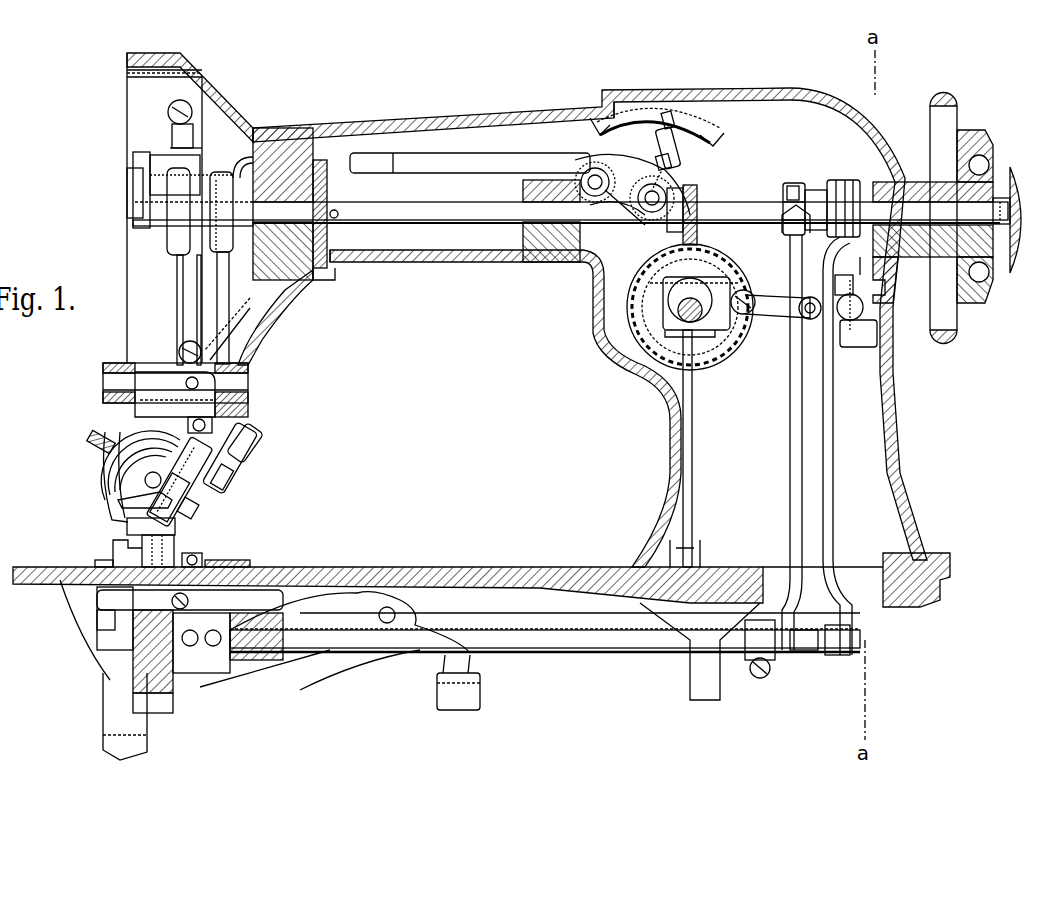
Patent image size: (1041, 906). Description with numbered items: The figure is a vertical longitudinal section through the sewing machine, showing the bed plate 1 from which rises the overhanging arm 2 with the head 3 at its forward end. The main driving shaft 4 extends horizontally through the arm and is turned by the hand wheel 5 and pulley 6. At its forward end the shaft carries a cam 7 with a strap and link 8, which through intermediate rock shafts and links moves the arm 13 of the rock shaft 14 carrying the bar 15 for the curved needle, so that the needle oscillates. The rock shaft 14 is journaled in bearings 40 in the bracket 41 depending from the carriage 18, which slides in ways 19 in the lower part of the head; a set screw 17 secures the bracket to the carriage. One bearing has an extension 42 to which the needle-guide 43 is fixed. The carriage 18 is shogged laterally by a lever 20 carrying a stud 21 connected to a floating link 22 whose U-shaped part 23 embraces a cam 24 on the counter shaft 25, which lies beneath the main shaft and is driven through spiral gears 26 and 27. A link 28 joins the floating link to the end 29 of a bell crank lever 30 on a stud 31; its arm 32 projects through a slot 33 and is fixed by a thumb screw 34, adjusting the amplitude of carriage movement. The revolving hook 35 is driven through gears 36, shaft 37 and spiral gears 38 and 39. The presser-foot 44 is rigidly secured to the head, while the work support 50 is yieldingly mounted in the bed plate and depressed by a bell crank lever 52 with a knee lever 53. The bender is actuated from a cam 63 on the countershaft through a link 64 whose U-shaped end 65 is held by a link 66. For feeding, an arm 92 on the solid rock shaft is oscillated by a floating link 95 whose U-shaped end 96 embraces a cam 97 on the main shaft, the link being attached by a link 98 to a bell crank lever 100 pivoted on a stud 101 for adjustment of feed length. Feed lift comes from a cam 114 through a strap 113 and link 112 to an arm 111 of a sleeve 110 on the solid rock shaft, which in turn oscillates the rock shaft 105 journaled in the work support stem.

The bed plate 1 is at (292, 570).
The overhanging arm 2 is at (545, 120).
The head 3 is at (215, 92).
The main driving shaft 4 is at (480, 204).
The hand wheel 5 is at (1012, 180).
The pulley 6 is at (975, 135).
The cam 7 is at (221, 172).
The strap and link 8 is at (218, 279).
The arm 13 is at (240, 472).
The rock shaft 14 is at (230, 482).
The bar 15 is at (158, 476).
The set screw 17 is at (214, 424).
The carriage 18 is at (185, 380).
The ways 19 is at (250, 397).
The lever 20 is at (178, 291).
The stud 21 is at (175, 245).
The floating link 22 is at (252, 160).
The U-shaped part 23 is at (735, 250).
The cam 24 is at (745, 278).
The counter shaft 25 is at (680, 312).
The spiral gear 26 is at (699, 200).
The spiral gear 27 is at (715, 365).
The link 28 is at (625, 215).
The end of bell crank lever 29 is at (603, 172).
The bell crank lever 30 is at (668, 185).
The stud 31 is at (697, 182).
The arm 32 is at (676, 165).
The slot 33 is at (705, 125).
The thumb screw 34 is at (672, 108).
The revolving hook 35 is at (104, 470).
The gears 36 is at (90, 428).
The shaft 37 is at (243, 290).
The spiral gear 38 is at (330, 226).
The spiral gear 39 is at (322, 160).
The bearings 40 is at (206, 495).
The bracket 41 is at (252, 458).
The extension 42 is at (198, 512).
The needle-guide 43 is at (180, 522).
The presser-foot 44 is at (128, 524).
The work support 50 is at (140, 552).
The bell crank lever 52 is at (275, 680).
The knee lever 53 is at (440, 710).
The cam 63 is at (672, 292).
The link 64 is at (692, 424).
The U-shaped end 65 is at (745, 328).
The link 66 is at (776, 304).
The arm 92 is at (103, 650).
The floating link 95 is at (835, 424).
The U-shaped end 96 is at (840, 180).
The cam 97 is at (856, 185).
The link 98 is at (852, 345).
The bell crank lever 100 is at (866, 345).
The bolt or stud 101 is at (893, 320).
The rock shaft 105 is at (103, 625).
The sleeve 110 is at (556, 660).
The arm 111 is at (775, 665).
The link 112 is at (790, 459).
The strap 113 is at (798, 188).
The cam 114 is at (783, 192).